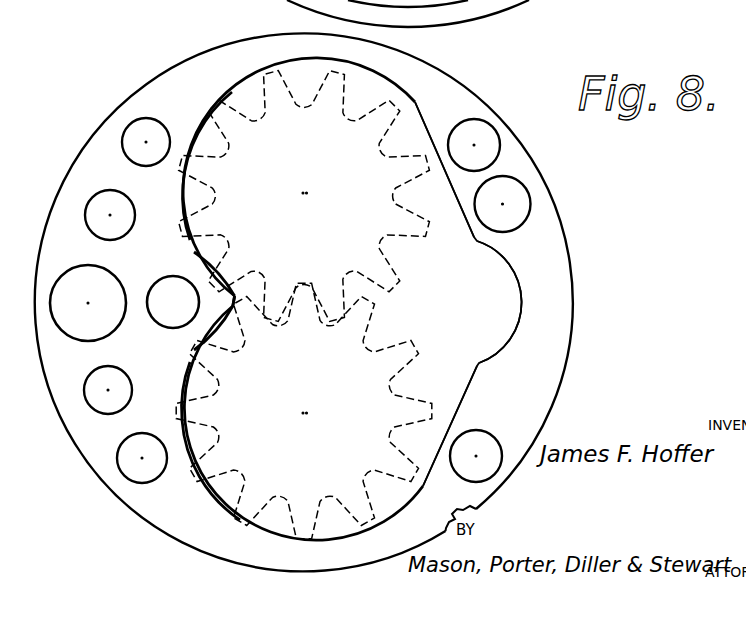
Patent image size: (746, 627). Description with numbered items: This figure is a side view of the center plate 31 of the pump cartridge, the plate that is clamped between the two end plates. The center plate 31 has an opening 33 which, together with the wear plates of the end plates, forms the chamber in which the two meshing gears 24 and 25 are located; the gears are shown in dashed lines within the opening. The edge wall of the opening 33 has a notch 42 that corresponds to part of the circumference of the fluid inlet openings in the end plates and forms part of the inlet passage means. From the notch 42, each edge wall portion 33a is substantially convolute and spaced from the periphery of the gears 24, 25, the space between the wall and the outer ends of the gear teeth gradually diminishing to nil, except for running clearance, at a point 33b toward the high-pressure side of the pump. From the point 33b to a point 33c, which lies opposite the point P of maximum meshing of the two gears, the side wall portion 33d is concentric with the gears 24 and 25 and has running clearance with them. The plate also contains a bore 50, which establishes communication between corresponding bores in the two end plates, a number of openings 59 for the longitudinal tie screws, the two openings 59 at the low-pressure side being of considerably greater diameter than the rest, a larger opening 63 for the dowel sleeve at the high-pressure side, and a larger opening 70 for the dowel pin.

The center plate 31 is at (208, 53).
The opening 33 is at (468, 270).
The edge wall portions 33a is at (432, 133).
The point 33b is at (205, 110).
The point 33c is at (232, 302).
The side wall portion 33d is at (183, 197).
The notch 42 is at (520, 312).
The gear 24 is at (383, 118).
The gear 25 is at (412, 410).
The point of maximum meshing P is at (304, 308).
The openings 59 is at (131, 153).
The opening 63 is at (89, 266).
The bore 50 is at (172, 276).
The opening 70 is at (526, 199).